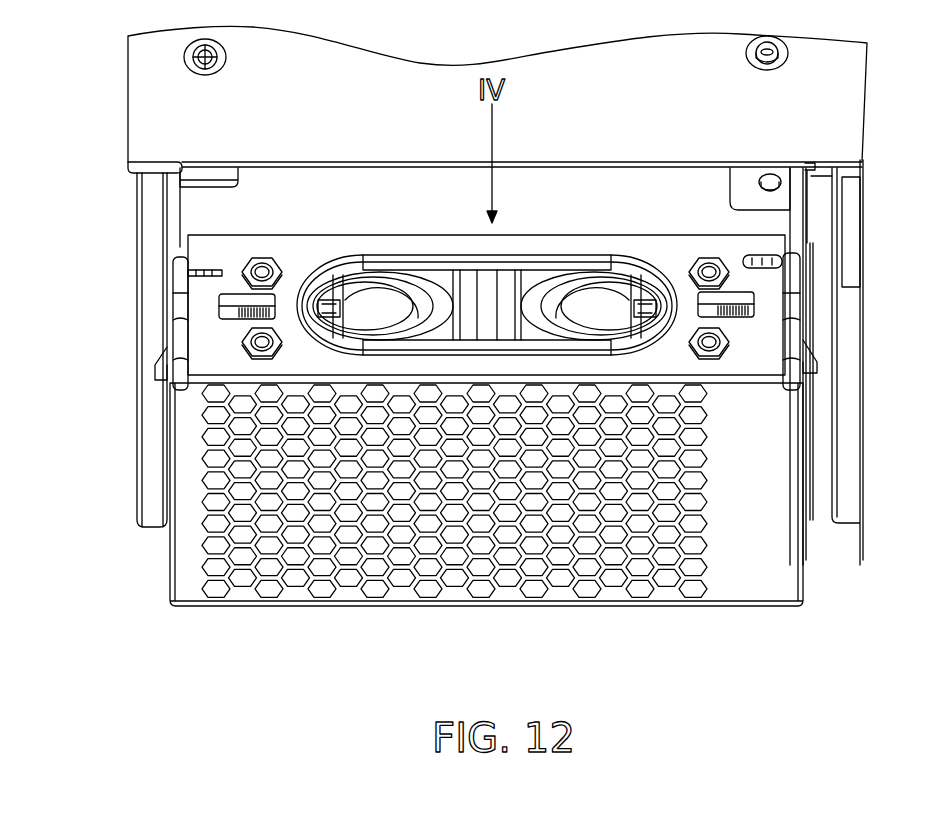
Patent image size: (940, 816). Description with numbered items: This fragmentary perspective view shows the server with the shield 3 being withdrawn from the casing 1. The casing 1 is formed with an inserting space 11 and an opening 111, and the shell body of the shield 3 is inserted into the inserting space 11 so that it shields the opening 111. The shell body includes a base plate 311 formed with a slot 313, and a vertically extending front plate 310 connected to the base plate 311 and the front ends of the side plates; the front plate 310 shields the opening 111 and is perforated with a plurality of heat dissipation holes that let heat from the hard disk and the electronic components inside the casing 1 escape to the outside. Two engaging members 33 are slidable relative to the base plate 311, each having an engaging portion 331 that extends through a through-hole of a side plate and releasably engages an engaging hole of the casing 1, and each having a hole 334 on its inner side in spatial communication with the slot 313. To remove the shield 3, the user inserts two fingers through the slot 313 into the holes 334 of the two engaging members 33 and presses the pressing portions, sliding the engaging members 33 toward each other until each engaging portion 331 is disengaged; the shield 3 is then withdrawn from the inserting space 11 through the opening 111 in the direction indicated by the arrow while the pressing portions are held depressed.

The casing 1 is at (128, 115).
The opening 111 is at (180, 208).
The inserting space 11 is at (327, 215).
The shield 3 is at (770, 608).
The front plate 310 is at (733, 580).
The base plate 311 is at (393, 246).
The slot 313 is at (587, 271).
The engaging member 33 is at (437, 274).
The engaging portion 331 is at (162, 368).
The hole 334 is at (370, 306).